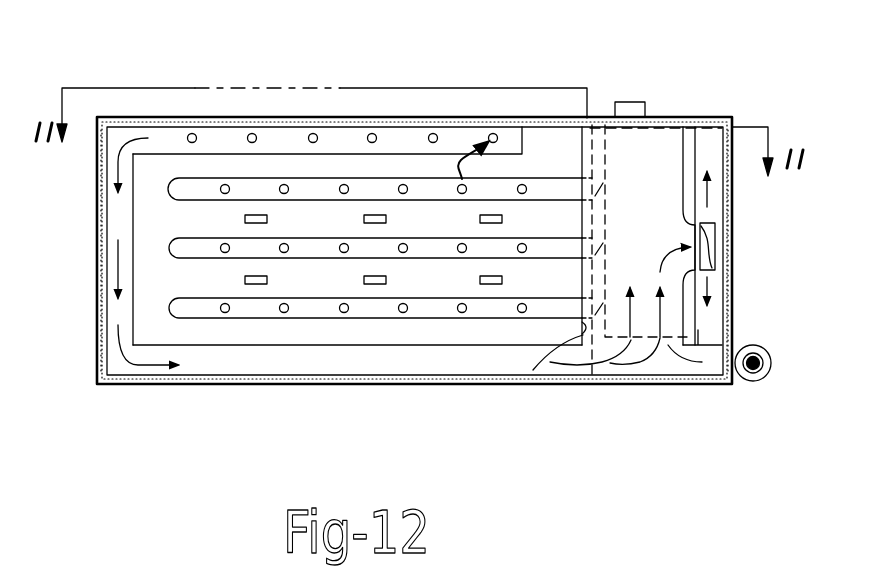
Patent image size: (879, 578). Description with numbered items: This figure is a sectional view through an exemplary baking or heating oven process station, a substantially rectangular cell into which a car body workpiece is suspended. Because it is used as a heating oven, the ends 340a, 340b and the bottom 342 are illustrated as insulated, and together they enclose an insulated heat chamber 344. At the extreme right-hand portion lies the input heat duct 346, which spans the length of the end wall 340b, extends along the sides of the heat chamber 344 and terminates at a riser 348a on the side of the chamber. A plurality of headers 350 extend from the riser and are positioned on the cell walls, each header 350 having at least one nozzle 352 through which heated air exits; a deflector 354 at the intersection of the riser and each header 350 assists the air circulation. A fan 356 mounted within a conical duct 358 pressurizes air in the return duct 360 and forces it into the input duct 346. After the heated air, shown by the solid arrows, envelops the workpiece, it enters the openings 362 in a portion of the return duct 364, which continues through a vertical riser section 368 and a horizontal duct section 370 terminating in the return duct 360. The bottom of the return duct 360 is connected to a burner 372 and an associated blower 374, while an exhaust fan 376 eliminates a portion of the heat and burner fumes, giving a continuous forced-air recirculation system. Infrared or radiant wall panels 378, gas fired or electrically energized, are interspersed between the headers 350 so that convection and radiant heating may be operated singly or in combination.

The end 340a is at (94, 212).
The end 340b is at (736, 216).
The bottom 342 is at (680, 383).
The insulated heat chamber 344 is at (657, 128).
The input heat duct 346 is at (714, 236).
The riser 348a is at (603, 145).
The headers 350 is at (191, 310).
The nozzle 352 is at (226, 313).
The deflector 354 is at (600, 186).
The fan 356 is at (708, 246).
The conical duct 358 is at (548, 360).
The return duct 360 is at (636, 360).
The openings 362 is at (374, 134).
The return duct 364 is at (508, 133).
The vertical riser section 368 is at (118, 232).
The horizontal duct section 370 is at (352, 360).
The burner 372 is at (712, 360).
The blower 374 is at (748, 348).
The exhaust fan 376 is at (632, 103).
The infrared or radiant wall panels 378 is at (254, 214).